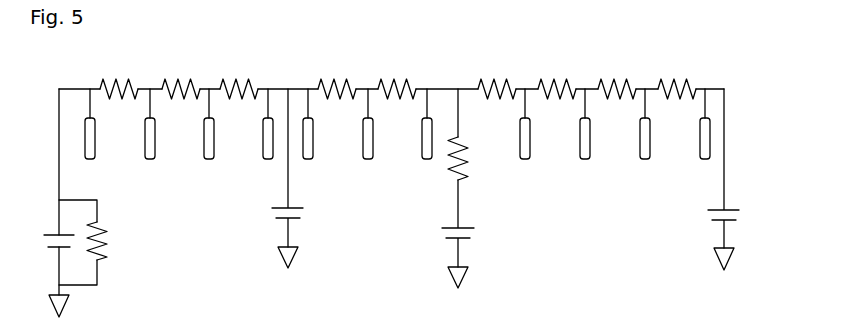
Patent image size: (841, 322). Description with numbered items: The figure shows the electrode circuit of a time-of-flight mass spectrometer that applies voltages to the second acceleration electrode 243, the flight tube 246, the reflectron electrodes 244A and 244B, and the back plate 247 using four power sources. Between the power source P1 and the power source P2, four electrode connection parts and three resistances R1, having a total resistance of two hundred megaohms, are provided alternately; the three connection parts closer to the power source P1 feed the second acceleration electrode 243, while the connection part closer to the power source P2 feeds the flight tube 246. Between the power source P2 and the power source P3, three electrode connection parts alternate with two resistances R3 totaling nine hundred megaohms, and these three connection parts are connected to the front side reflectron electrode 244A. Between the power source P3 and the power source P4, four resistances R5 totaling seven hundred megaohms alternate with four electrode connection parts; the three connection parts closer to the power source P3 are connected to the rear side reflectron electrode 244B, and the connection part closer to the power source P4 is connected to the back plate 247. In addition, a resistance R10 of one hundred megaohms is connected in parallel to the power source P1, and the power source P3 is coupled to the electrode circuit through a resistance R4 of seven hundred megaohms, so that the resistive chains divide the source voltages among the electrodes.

The resistances R1 is at (113, 70).
The resistances R3 is at (328, 70).
The resistances R5 is at (497, 70).
The resistance R4 is at (472, 161).
The resistance R10 is at (101, 242).
The second acceleration electrode 243 is at (88, 168).
The front side reflectron electrode 244A is at (310, 168).
The rear side reflectron electrode 244B is at (525, 168).
The flight tube 246 is at (264, 163).
The back plate 247 is at (704, 162).
The power source P1 is at (50, 256).
The power source P2 is at (304, 220).
The power source P3 is at (474, 250).
The power source P4 is at (742, 223).